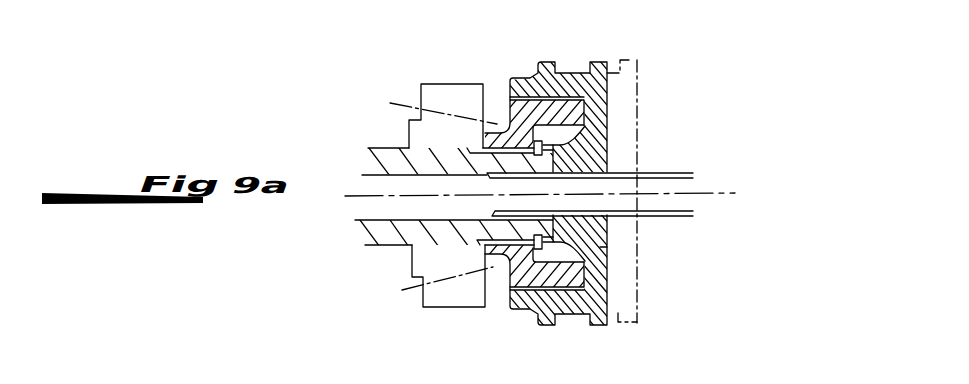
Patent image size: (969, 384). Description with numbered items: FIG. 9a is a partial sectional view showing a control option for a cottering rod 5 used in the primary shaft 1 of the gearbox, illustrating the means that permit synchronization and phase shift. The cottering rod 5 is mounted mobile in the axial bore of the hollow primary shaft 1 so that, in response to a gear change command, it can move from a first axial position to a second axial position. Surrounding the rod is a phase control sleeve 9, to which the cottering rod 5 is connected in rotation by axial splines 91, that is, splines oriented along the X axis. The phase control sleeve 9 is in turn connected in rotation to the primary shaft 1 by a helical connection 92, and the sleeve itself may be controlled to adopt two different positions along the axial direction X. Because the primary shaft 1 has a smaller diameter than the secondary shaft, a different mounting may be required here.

The primary shaft 1 is at (371, 146).
The cottering rod 5 is at (658, 187).
The phase control sleeve 9 is at (606, 130).
The axial splines 91 is at (604, 247).
The helical connection 92 is at (533, 98).
The X axis X is at (733, 193).